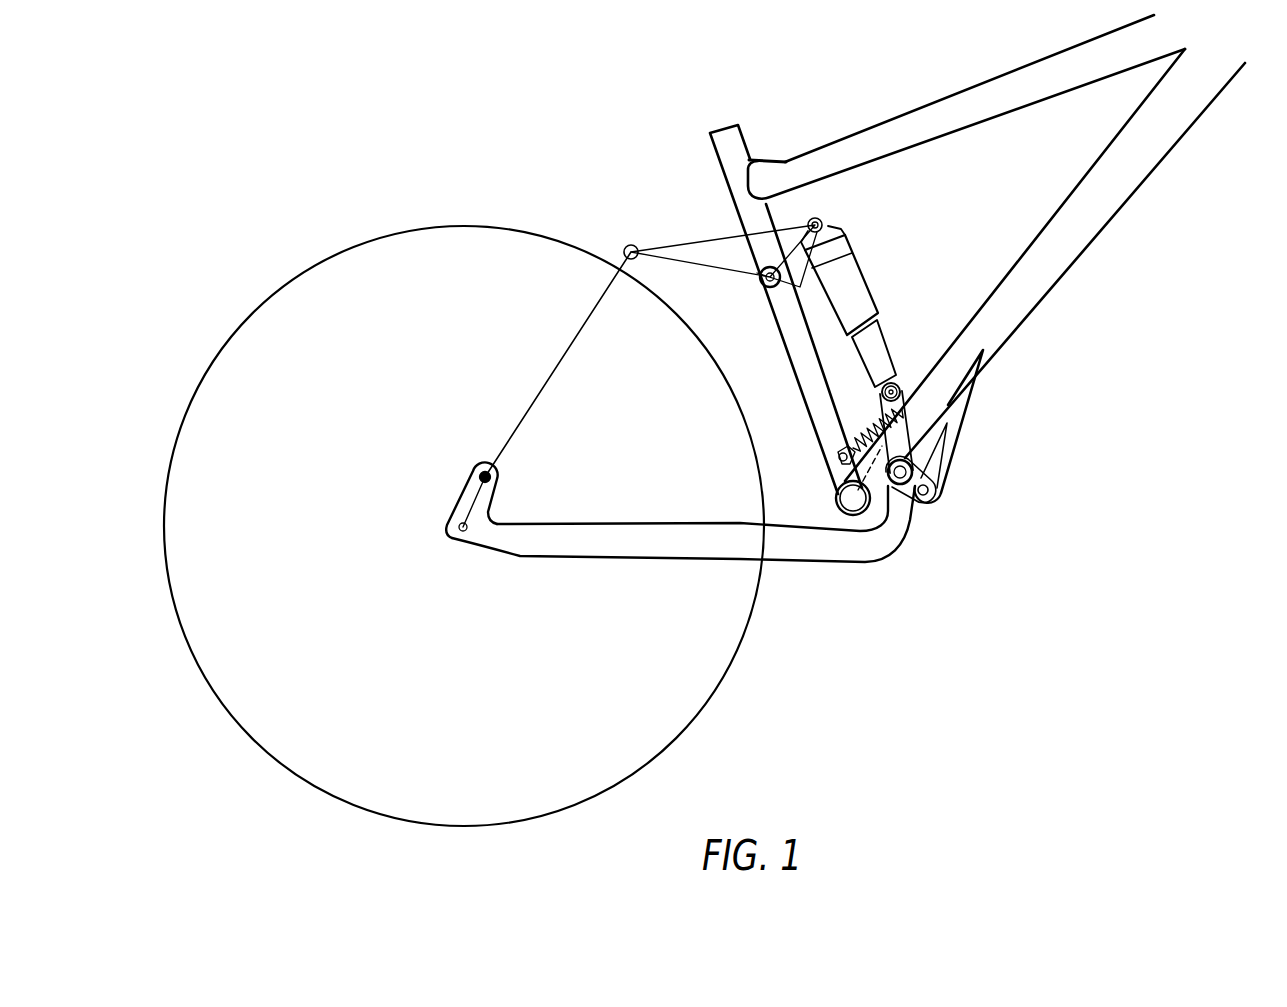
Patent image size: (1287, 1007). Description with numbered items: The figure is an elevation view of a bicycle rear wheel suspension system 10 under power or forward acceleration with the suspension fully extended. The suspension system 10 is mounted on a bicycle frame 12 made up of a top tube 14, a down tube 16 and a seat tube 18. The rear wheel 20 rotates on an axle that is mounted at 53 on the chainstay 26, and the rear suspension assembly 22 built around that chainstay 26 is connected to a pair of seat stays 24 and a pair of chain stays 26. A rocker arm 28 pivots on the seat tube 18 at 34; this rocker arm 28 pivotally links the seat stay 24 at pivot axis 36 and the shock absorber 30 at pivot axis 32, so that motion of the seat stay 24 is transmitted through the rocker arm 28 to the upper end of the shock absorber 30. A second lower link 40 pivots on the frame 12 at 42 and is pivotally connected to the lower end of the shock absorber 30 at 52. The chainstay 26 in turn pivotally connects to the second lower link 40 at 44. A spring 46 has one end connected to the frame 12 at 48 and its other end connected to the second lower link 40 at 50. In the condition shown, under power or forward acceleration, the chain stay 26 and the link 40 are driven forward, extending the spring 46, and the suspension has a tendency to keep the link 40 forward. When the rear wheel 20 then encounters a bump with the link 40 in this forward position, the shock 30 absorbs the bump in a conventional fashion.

The rear wheel suspension system 10 is at (597, 214).
The bicycle frame 12 is at (904, 110).
The top tube 14 is at (968, 129).
The down tube 16 is at (1156, 172).
The seat tube 18 is at (710, 136).
The rear wheel 20 is at (360, 244).
The rear suspension assembly 22 is at (549, 353).
The seat stay 24 is at (540, 398).
The chainstay 26 is at (592, 547).
The rocker arm 28 is at (718, 254).
The shock absorber 30 is at (870, 284).
The pivot axis 32 is at (822, 222).
The pivot 34 is at (768, 290).
The pivot axis 36 is at (632, 262).
The second lower link 40 is at (935, 462).
The pivot 42 is at (935, 490).
The pivot 44 is at (903, 486).
The spring 46 is at (867, 425).
The spring connection 48 is at (840, 460).
The spring connection 50 is at (903, 398).
The pivot connection 52 is at (896, 384).
The axle mount 53 is at (452, 533).